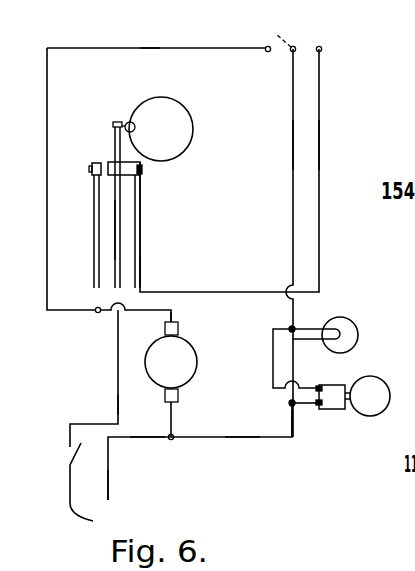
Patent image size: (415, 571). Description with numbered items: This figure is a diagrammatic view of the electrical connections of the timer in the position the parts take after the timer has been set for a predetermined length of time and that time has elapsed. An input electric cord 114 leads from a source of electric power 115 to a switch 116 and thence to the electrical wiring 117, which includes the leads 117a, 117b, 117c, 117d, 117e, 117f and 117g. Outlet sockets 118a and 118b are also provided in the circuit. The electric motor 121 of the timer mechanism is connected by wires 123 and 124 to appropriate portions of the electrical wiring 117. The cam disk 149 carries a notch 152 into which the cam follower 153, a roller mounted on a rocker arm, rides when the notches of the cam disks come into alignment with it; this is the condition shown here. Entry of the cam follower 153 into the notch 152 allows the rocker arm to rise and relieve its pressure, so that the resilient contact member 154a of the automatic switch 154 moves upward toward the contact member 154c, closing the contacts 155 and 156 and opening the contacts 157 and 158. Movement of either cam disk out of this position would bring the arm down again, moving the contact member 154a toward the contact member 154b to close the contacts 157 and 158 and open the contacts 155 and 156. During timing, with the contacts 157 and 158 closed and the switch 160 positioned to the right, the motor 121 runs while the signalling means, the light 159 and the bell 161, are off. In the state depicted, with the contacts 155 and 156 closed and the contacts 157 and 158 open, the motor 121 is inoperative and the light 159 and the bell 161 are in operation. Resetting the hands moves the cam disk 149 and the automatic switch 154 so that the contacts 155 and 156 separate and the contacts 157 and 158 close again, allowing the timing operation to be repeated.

The input electric cord 114 is at (108, 468).
The source of electric power 115 is at (100, 512).
The switch 116 is at (78, 449).
The electrical wiring 117 is at (116, 358).
The lead 117a is at (117, 403).
The lead 117b is at (148, 438).
The lead 117c is at (242, 438).
The lead 117d is at (293, 425).
The lead 117e is at (293, 148).
The lead 117f is at (355, 128).
The lead 117g is at (152, 47).
The outlet socket 118a is at (292, 328).
The outlet socket 118b is at (294, 402).
The electric motor 121 is at (180, 370).
The wire 123 is at (172, 420).
The wire 124 is at (171, 318).
The cam disk 149 is at (177, 122).
The notch 152 is at (133, 122).
The cam follower 153 is at (128, 123).
The automatic switch 154 is at (142, 268).
The resilient contact member 154a is at (117, 232).
The contact member 154b is at (93, 222).
The contact member 154c is at (137, 248).
The contact 155 is at (120, 176).
The contact 156 is at (142, 174).
The contact 157 is at (95, 161).
The contact 158 is at (110, 150).
The light 159 is at (353, 325).
The switch 160 is at (300, 29).
The bell 161 is at (375, 390).